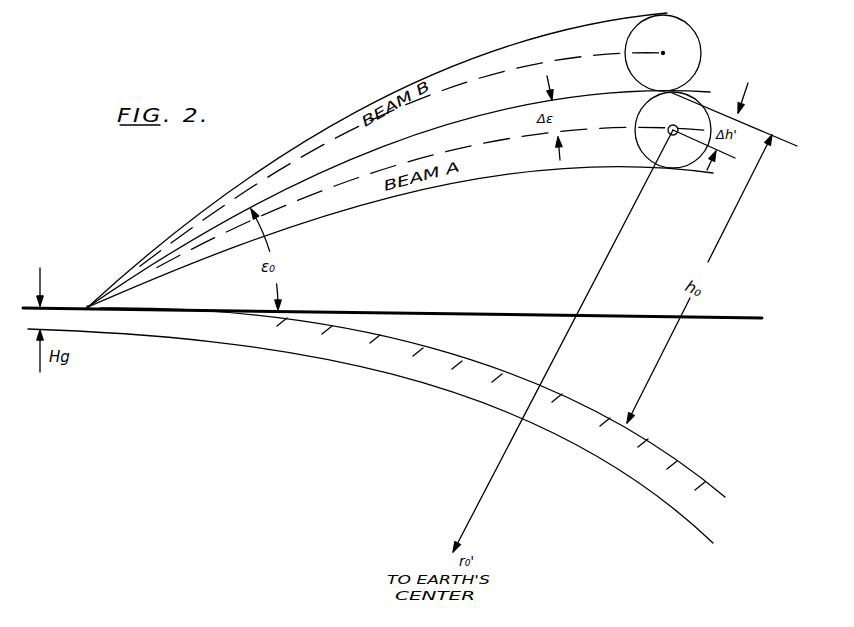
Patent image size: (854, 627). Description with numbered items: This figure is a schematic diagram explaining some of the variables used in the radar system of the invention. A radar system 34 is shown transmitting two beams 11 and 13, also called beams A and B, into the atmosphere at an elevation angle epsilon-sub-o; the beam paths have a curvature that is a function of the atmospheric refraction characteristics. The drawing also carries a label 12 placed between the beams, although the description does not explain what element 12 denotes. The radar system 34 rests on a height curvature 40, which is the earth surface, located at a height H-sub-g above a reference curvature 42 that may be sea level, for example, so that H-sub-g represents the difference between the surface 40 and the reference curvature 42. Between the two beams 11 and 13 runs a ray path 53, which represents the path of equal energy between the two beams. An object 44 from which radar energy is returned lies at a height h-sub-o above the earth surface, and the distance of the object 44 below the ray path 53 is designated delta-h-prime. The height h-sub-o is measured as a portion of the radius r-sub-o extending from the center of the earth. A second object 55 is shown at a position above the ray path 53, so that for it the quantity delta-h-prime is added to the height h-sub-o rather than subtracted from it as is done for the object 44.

The beam 11 is at (318, 212).
The beam A centerline 12 is at (371, 147).
The beam 13 is at (318, 137).
The radar system 34 is at (87, 304).
The height curvature 40 is at (477, 364).
The reference curvature 42 is at (452, 398).
The object 44 is at (673, 130).
The ray path 53 is at (278, 194).
The object 55 is at (663, 53).